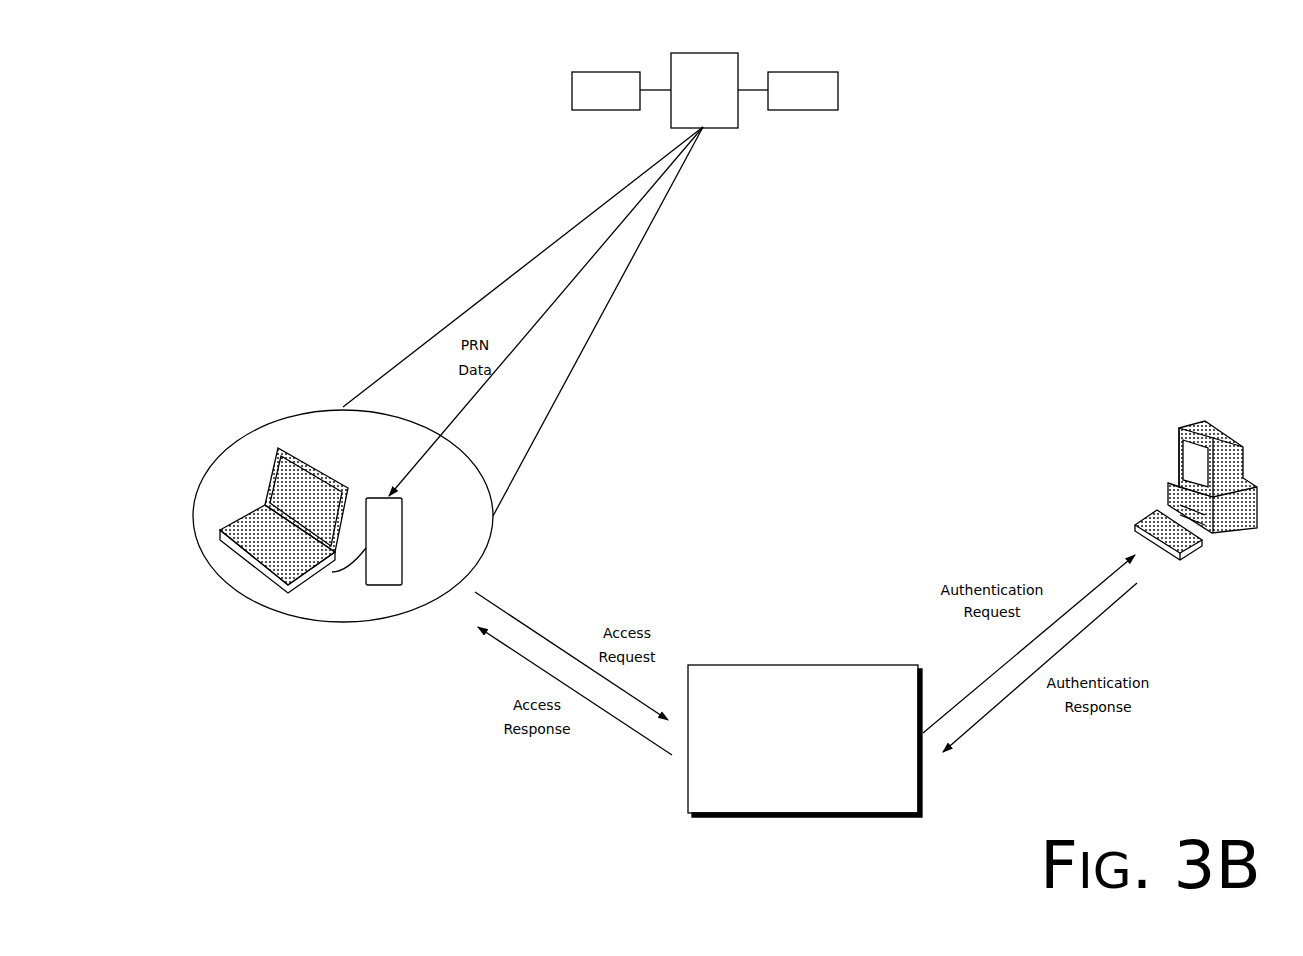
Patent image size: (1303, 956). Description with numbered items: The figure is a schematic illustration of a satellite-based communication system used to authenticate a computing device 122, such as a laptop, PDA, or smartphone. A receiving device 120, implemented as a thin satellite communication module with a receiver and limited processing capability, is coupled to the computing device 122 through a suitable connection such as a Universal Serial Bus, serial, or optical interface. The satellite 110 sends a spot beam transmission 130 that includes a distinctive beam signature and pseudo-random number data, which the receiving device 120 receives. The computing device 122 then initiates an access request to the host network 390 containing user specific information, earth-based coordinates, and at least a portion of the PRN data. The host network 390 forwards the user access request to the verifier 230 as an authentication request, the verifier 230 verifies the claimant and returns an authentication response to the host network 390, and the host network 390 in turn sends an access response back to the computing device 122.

The satellite 110 is at (705, 53).
The receiving device 120 is at (393, 485).
The computing device 122 is at (287, 449).
The spot beam transmission 130 is at (277, 613).
The verifier 230 is at (1208, 427).
The host network 390 is at (790, 757).